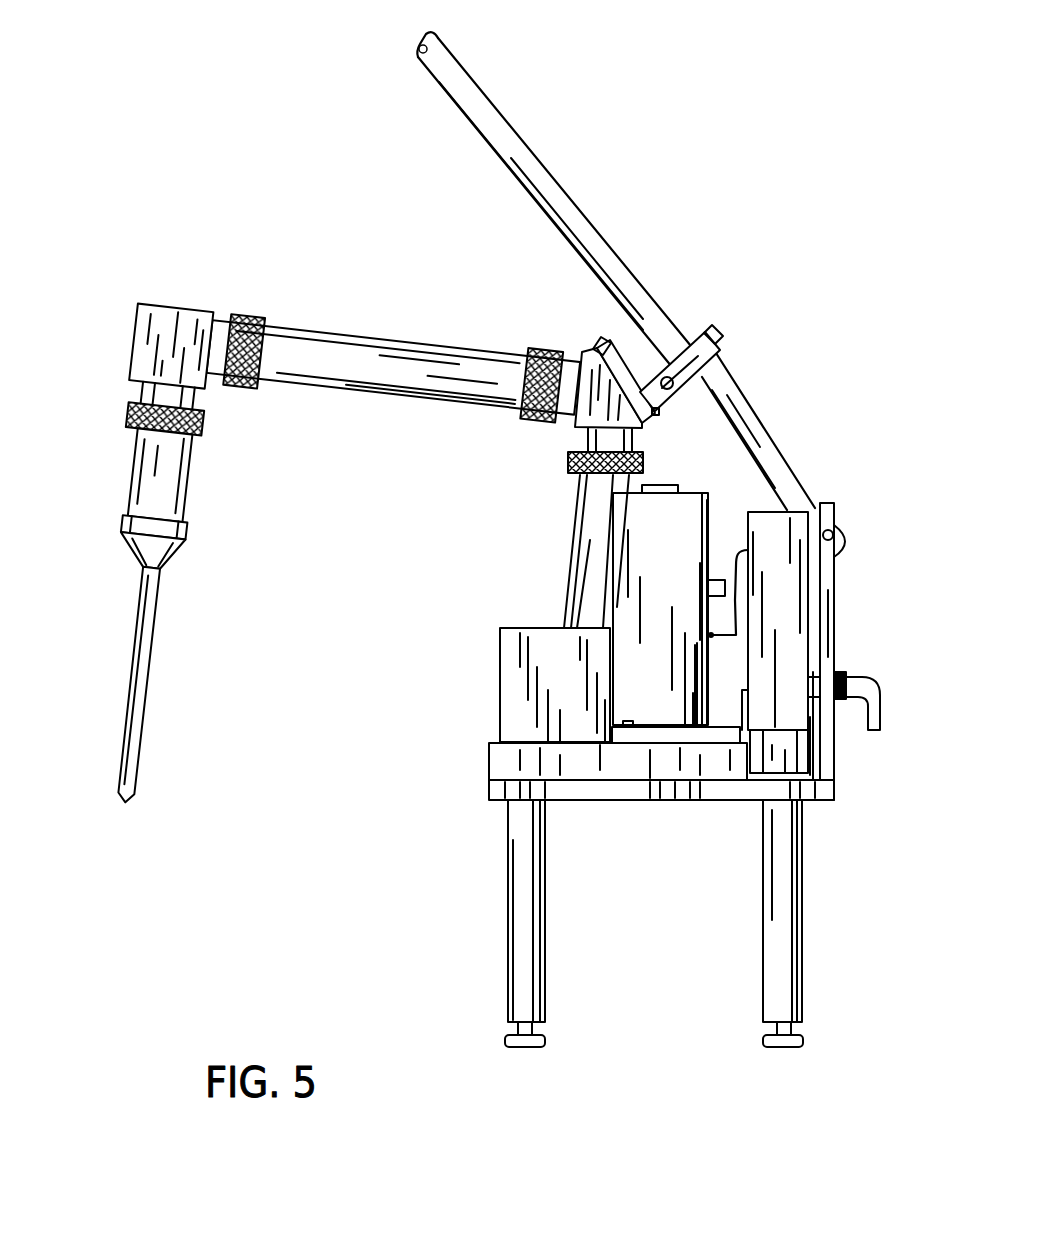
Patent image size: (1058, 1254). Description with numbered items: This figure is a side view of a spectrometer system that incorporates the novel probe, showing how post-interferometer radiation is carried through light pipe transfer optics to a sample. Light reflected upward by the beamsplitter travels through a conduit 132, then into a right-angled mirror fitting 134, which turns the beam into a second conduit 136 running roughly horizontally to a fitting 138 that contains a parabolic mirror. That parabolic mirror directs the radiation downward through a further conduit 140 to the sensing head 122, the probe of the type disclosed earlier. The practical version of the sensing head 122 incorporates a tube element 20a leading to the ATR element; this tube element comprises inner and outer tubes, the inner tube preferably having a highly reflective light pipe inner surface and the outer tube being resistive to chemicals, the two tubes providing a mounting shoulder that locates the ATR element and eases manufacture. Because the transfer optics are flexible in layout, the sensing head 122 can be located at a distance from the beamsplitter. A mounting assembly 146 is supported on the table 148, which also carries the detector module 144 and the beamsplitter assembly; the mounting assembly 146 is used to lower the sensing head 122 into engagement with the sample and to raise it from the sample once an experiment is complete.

The tube element 20a is at (189, 667).
The sensing head 122 is at (145, 703).
The conduit 132 is at (592, 530).
The right-angled mirror fitting 134 is at (578, 432).
The conduit 136 is at (415, 372).
The fitting 138 is at (145, 350).
The conduit 140 is at (132, 471).
The detector module 144 is at (516, 727).
The mounting assembly 146 is at (882, 554).
The table 148 is at (618, 804).